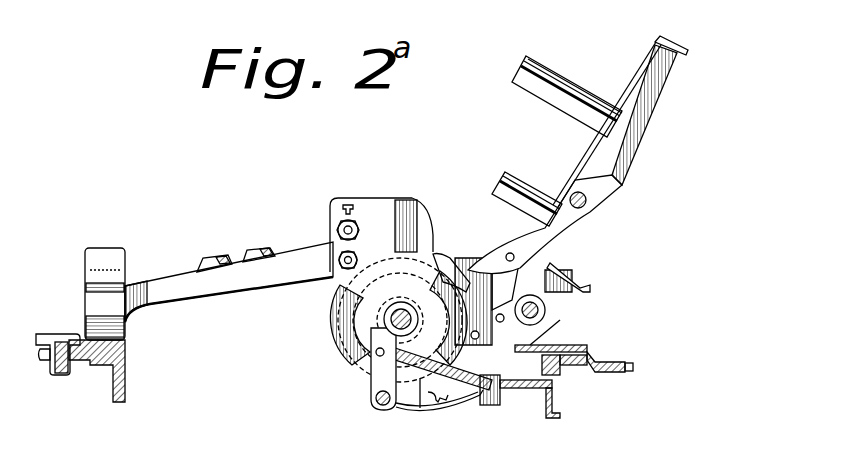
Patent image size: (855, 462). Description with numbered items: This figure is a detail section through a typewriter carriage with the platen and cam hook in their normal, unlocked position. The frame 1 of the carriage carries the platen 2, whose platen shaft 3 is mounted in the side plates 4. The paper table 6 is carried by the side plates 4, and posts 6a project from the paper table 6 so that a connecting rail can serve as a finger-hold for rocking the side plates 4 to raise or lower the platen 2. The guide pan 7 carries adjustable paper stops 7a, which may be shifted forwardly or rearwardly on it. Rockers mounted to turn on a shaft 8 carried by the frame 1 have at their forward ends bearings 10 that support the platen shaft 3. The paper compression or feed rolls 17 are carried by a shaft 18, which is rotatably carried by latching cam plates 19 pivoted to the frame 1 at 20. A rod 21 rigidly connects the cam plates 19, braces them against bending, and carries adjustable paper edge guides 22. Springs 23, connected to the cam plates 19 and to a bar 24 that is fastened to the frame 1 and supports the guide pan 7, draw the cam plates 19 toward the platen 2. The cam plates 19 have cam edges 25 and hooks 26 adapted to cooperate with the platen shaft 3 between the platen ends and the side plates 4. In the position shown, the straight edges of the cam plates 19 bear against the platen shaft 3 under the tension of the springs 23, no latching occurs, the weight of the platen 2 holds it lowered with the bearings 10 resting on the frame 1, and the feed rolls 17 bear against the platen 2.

The frame 1 is at (222, 282).
The platen 2 is at (369, 372).
The platen shaft 3 is at (412, 322).
The side plates 4 is at (495, 266).
The paper table 6 is at (648, 92).
The posts 6a is at (550, 80).
The guide pan 7 is at (397, 410).
The adjustable paper stops 7a is at (422, 410).
The shaft 8 is at (546, 310).
The bearings 10 is at (360, 352).
The paper compression or feed rolls 17 is at (340, 261).
The shaft 18 is at (368, 292).
The latching cam plates 19 is at (380, 306).
The pivot 20 is at (377, 404).
The rod 21 is at (338, 231).
The adjustable paper edge guides 22 is at (395, 212).
The springs 23 is at (494, 336).
The bar 24 is at (492, 408).
The cam edges 25 is at (386, 322).
The hooks 26 is at (446, 262).